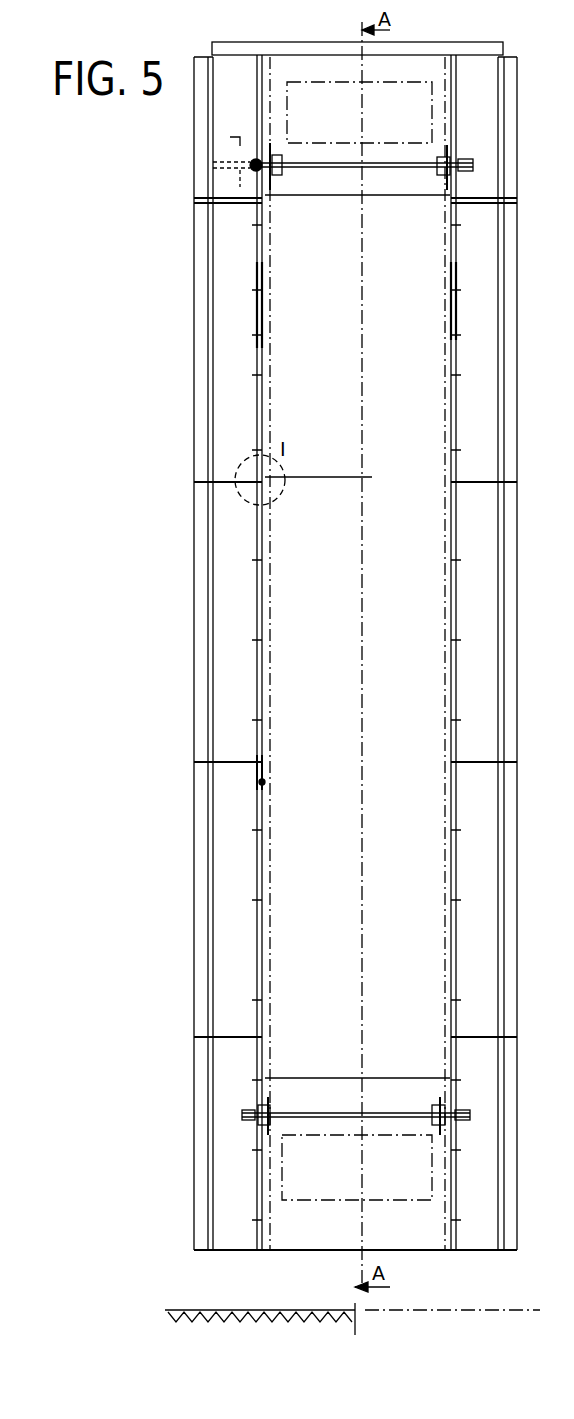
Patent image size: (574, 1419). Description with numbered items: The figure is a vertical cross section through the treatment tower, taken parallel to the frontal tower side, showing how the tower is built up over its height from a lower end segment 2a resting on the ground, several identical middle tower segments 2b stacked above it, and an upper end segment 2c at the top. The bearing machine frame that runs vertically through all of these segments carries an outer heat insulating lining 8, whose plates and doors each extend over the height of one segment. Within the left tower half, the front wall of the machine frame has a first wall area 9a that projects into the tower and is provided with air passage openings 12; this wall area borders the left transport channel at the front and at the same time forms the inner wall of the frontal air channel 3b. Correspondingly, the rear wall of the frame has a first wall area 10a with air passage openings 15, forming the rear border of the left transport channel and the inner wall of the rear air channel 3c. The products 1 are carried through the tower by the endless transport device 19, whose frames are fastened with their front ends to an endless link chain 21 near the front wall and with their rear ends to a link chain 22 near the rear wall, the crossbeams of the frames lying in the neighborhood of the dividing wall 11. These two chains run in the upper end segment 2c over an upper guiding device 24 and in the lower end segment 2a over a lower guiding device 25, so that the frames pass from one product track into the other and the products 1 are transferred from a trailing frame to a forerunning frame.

The products 1 is at (305, 82).
The lower end segment 2a is at (188, 1128).
The middle tower segments 2b is at (188, 325).
The upper end segment 2c is at (188, 148).
The front air channel 3b is at (213, 257).
The rear air channel 3c is at (490, 262).
The outer heat insulating lining 8 is at (242, 44).
The first wall area of the front wall 9a is at (258, 82).
The first wall area of the rear wall 10a is at (457, 104).
The dividing wall 11 is at (298, 422).
The air passage openings 12 is at (262, 342).
The air passage openings 15 is at (456, 334).
The transport device 19 is at (262, 782).
The endless link chain 21 is at (272, 352).
The link chain 22 is at (445, 347).
The upper guiding device 24 is at (337, 163).
The lower guiding device 25 is at (372, 1110).